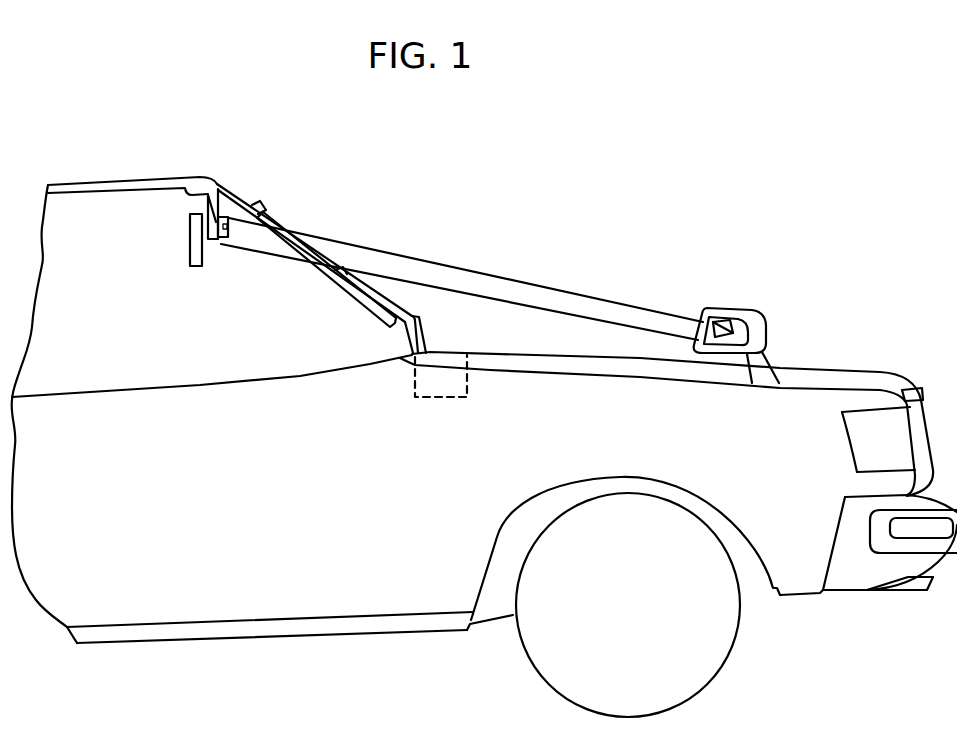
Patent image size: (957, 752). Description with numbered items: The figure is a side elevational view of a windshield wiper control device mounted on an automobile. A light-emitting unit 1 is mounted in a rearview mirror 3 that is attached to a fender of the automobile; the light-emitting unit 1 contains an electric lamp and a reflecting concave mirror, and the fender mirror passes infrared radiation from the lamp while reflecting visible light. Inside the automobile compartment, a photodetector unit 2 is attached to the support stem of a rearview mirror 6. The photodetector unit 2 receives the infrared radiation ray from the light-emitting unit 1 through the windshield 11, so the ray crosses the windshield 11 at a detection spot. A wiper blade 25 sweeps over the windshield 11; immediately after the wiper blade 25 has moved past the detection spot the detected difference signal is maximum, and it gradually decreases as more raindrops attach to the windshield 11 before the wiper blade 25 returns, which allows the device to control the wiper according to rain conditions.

The light-emitting unit 1 is at (728, 327).
The photodetector unit 2 is at (229, 222).
The rearview mirror 3 is at (750, 318).
The rearview mirror 6 is at (202, 214).
The windshield 11 is at (352, 302).
The wiper blade 25 is at (420, 316).